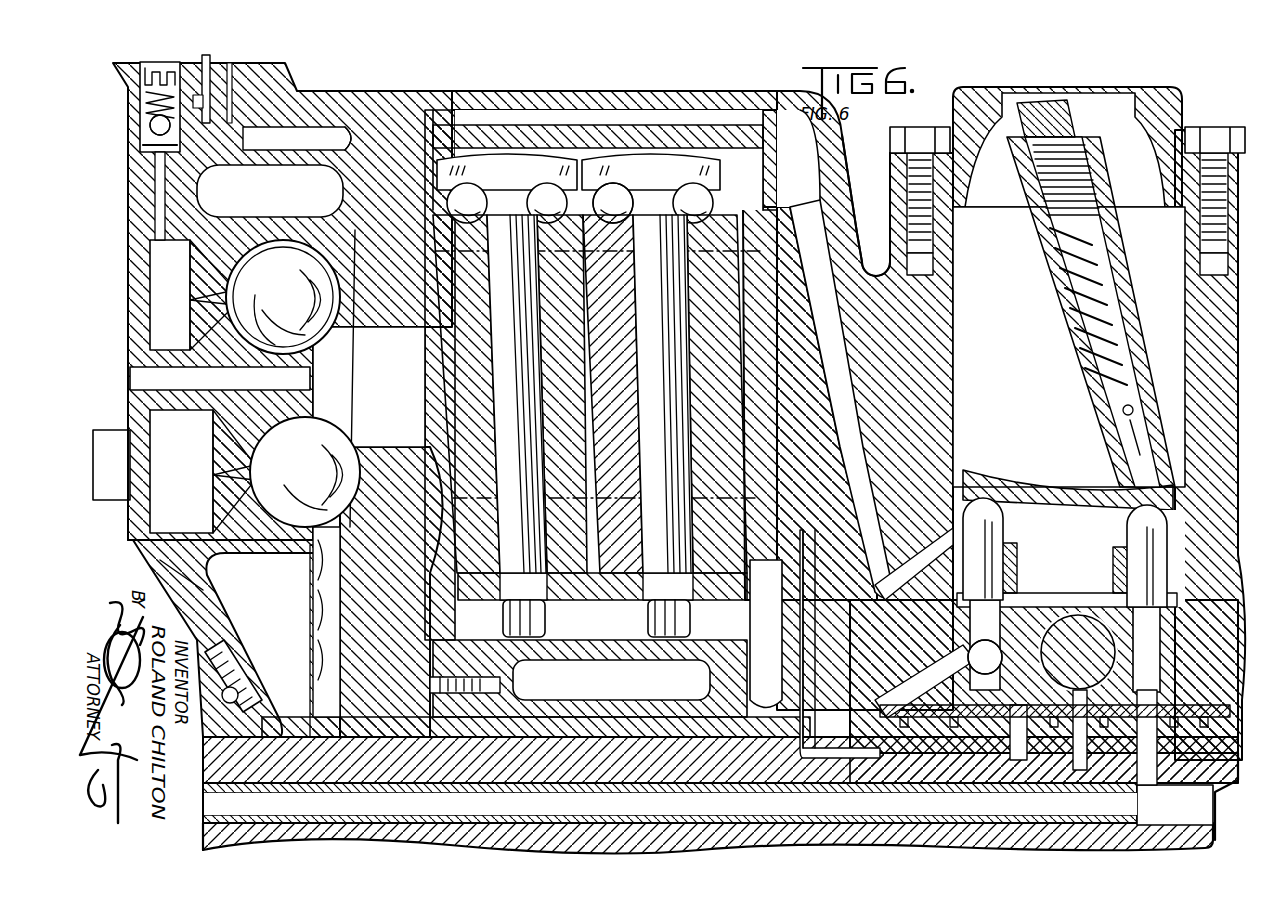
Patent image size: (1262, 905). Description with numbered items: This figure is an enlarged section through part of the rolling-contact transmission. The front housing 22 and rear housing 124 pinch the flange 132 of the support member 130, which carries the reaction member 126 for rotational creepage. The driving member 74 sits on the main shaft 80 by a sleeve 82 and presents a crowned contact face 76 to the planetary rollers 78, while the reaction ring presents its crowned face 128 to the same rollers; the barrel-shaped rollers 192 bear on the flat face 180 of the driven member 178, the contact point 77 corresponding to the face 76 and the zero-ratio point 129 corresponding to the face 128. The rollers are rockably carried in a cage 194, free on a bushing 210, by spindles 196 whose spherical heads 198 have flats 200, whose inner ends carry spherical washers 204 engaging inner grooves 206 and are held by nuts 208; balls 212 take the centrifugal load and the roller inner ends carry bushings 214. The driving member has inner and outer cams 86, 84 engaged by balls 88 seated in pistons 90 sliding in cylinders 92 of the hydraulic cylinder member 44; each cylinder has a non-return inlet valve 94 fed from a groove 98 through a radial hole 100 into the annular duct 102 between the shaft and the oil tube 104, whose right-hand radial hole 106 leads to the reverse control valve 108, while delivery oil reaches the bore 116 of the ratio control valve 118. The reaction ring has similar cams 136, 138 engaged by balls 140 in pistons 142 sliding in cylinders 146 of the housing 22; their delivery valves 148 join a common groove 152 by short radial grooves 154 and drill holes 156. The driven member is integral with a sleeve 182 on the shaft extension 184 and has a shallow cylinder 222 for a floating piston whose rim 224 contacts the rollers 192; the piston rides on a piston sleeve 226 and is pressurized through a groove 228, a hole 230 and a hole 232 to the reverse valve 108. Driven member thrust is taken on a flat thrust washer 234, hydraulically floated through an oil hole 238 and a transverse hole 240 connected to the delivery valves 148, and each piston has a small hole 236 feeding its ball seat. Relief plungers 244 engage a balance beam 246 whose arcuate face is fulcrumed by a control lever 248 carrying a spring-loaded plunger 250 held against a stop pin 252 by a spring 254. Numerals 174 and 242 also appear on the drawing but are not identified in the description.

The front housing 22 is at (135, 212).
The driving member assemblage 44 is at (150, 441).
The driving member 74 is at (378, 447).
The crowned contact face 76 is at (425, 460).
The contact point 77 is at (730, 500).
The planetary rollers 78 is at (455, 378).
The main shaft 80 is at (215, 766).
The sleeve 82 is at (578, 718).
The outer cams 84 is at (337, 547).
The inner cams 86 is at (337, 530).
The balls 88 is at (305, 472).
The plungers or pistons 90 is at (225, 498).
The cylinders 92 is at (176, 545).
The non-return inlet valve 94 is at (237, 660).
The groove 98 is at (265, 700).
The radial hole 100 is at (265, 830).
The annular duct 102 is at (545, 820).
The oil tube 104 is at (678, 820).
The radial hole 106 is at (1050, 788).
The reverse control valve 108 is at (1116, 655).
The bore of ratio control valve 116 is at (1150, 627).
The ratio control valve 118 is at (1128, 597).
The rear housing 124 is at (560, 94).
The reaction member 126 is at (387, 215).
The crowned face 128 is at (440, 300).
The zero ratio point 129 is at (747, 247).
The support member 130 is at (360, 158).
The flange 132 is at (155, 95).
The cams 136 is at (300, 222).
The cams 138 is at (366, 378).
The balls 140 is at (283, 297).
The plungers or pistons 142 is at (215, 328).
The cylinders 146 is at (150, 345).
The delivery valves 148 is at (150, 127).
The common groove 152 is at (235, 105).
The short radial grooves 154 is at (262, 82).
The drill holes 156 is at (262, 66).
The corner block 174 is at (1145, 790).
The driven member 178 is at (788, 216).
The flat face 180 is at (738, 214).
The driven member sleeve 182 is at (975, 740).
The main shaft extension 184 is at (1210, 790).
The rollers 192 is at (730, 197).
The cage 194 is at (618, 133).
The spindles 196 is at (590, 394).
The spherical heads 198 is at (463, 157).
The flats 200 is at (745, 150).
The spherical washers 204 is at (585, 605).
The inner grooves 206 is at (645, 605).
The nuts 208 is at (503, 626).
The bushing 210 is at (525, 700).
The balls 212 is at (620, 200).
The bushings 214 is at (495, 553).
The shallow cylinder 222 is at (765, 580).
The rim 224 is at (768, 615).
The piston sleeve 226 is at (660, 718).
The groove 228 is at (840, 760).
The hole 230 is at (1010, 745).
The hole 232 is at (992, 648).
The thrust washer 234 is at (745, 618).
The small hole 236 is at (283, 297).
The oil hole 238 is at (937, 677).
The transverse hole 240 is at (992, 615).
The chamber 242 is at (1005, 595).
The relief valves or plungers 244 is at (1000, 535).
The balance beam 246 is at (985, 480).
The control lever 248 is at (1139, 283).
The spring loaded plunger 250 is at (1098, 400).
The stop pin 252 is at (1120, 412).
The spring 254 is at (1068, 306).